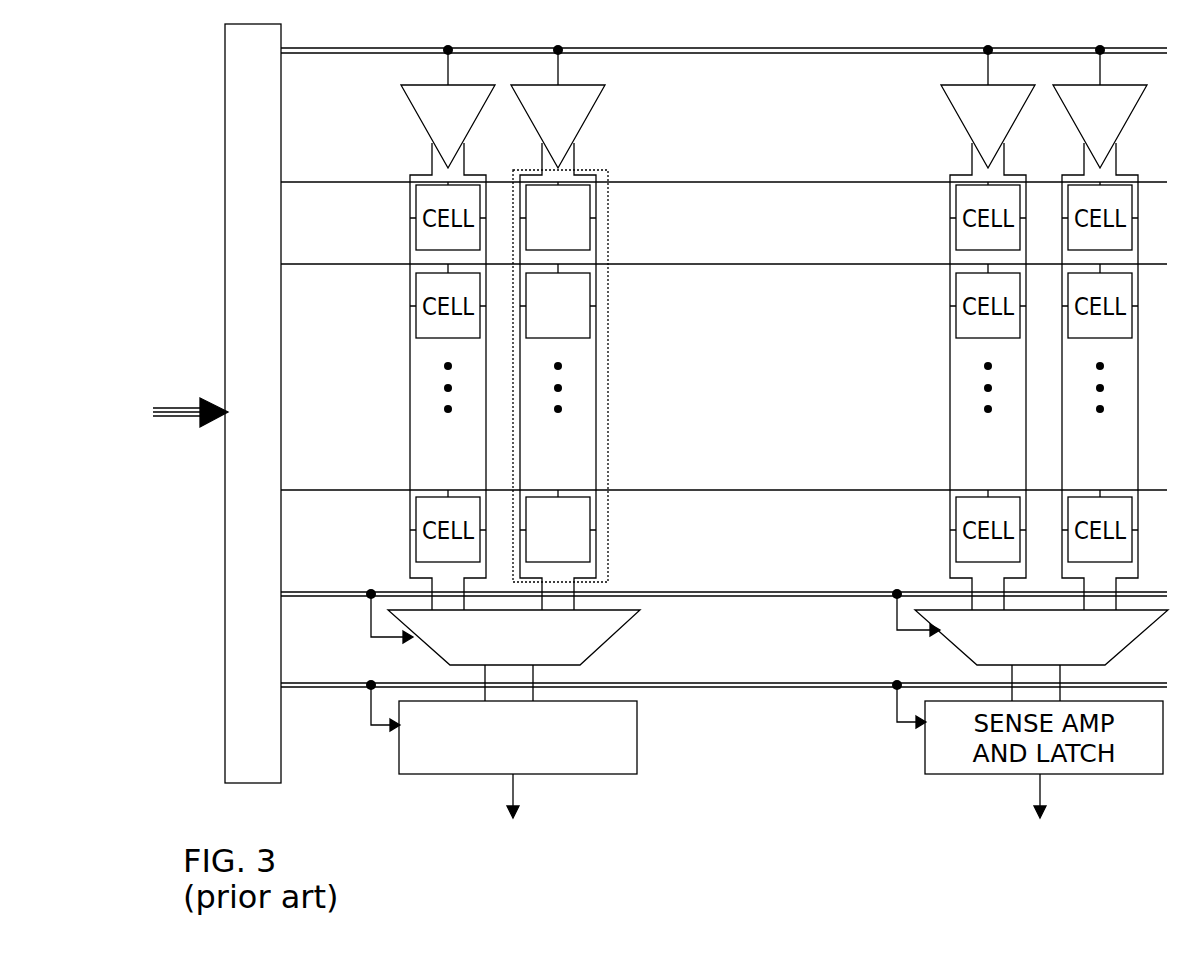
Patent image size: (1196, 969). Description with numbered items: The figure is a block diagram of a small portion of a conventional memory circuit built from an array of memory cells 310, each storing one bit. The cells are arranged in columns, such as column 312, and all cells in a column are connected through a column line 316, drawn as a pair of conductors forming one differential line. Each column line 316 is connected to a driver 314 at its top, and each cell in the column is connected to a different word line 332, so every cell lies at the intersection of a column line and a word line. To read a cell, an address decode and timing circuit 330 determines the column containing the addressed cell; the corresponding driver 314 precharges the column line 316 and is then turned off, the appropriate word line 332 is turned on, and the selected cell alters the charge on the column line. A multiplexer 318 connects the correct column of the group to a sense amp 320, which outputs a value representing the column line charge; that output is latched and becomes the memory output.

The memory cell 310 is at (595, 225).
The column 312 is at (603, 376).
The driver 314 is at (590, 114).
The column line 316 is at (598, 458).
The multiplexer 318 is at (618, 636).
The sense amp 320 is at (637, 745).
The address decode and timing circuit 330 is at (225, 675).
The word line 332 is at (682, 182).